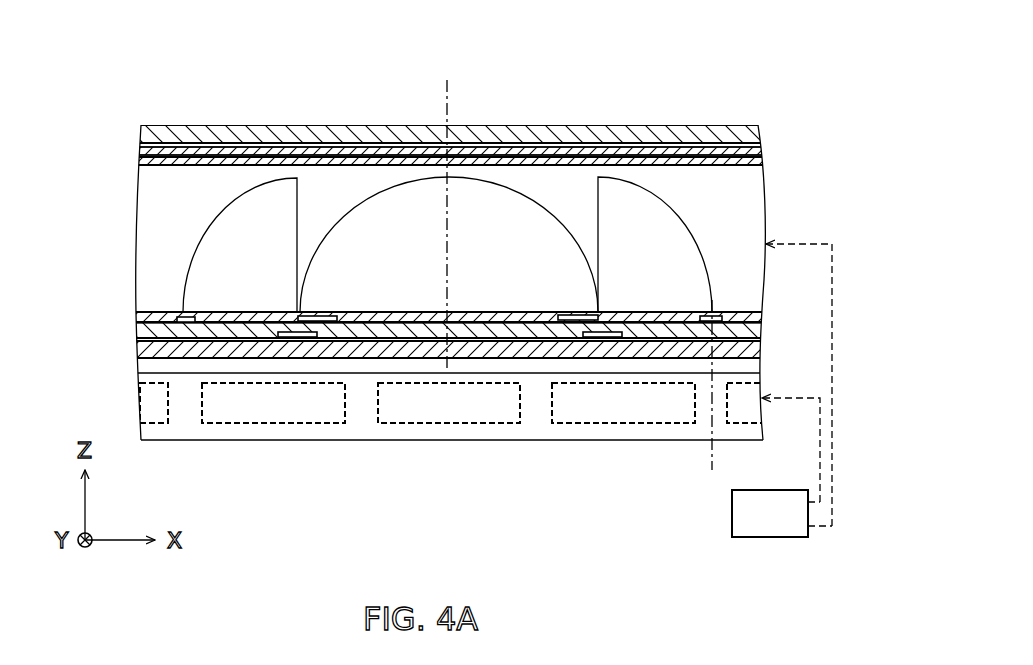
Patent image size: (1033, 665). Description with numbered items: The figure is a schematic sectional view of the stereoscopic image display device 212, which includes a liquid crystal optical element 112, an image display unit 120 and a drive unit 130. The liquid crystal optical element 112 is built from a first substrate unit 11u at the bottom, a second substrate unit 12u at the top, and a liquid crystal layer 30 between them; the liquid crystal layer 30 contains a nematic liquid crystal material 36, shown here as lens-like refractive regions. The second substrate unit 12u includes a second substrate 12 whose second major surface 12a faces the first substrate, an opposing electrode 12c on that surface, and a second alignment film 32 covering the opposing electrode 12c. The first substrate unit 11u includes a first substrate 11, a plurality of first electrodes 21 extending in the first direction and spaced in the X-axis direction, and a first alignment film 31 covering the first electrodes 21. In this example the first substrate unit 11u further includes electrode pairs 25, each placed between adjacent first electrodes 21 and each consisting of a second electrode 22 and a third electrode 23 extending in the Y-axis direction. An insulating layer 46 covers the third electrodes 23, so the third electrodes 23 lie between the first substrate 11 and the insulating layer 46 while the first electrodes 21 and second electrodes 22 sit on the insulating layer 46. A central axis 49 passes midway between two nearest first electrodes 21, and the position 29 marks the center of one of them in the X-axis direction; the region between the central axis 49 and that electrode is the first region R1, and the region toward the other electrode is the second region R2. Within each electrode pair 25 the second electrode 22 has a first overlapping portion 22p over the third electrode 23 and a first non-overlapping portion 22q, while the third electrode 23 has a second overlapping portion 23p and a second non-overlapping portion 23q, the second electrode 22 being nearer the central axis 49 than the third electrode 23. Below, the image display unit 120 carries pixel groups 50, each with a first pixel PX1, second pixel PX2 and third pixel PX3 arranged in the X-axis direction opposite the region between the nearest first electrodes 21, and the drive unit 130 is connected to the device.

The first substrate 11 is at (455, 349).
The first substrate unit 11u is at (455, 335).
The second substrate 12 is at (455, 134).
The second major surface 12a is at (740, 158).
The opposing electrode 12c is at (455, 151).
The second substrate unit 12u is at (455, 145).
The first electrode 21 is at (181, 317).
The second electrode 22 is at (332, 321).
The third electrode 23 is at (298, 337).
The first overlapping portion 22p is at (586, 322).
The first non-overlapping portion 22q is at (568, 322).
The second overlapping portion 23p is at (588, 338).
The second non-overlapping portion 23q is at (612, 338).
The electrode pair 25 is at (197, 524).
The position 29 is at (714, 458).
The liquid crystal layer 30 is at (139, 233).
The first alignment film 31 is at (455, 317).
The second alignment film 32 is at (455, 161).
The liquid crystal material 36 is at (158, 213).
The insulating layer 46 is at (455, 330).
The central axis 49 is at (449, 92).
The pixel group 50 is at (337, 483).
The liquid crystal optical element 112 is at (698, 123).
The image display unit 120 is at (455, 398).
The drive unit 130 is at (768, 515).
The stereoscopic image display device 212 is at (589, 65).
The first region R1 is at (673, 86).
The second region R2 is at (310, 122).
The first pixel PX1 is at (336, 424).
The second pixel PX2 is at (433, 424).
The third pixel PX3 is at (549, 424).